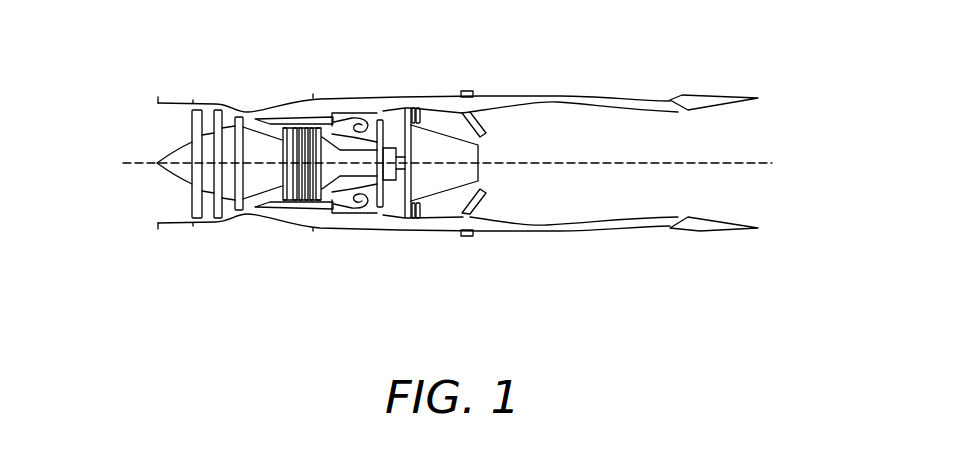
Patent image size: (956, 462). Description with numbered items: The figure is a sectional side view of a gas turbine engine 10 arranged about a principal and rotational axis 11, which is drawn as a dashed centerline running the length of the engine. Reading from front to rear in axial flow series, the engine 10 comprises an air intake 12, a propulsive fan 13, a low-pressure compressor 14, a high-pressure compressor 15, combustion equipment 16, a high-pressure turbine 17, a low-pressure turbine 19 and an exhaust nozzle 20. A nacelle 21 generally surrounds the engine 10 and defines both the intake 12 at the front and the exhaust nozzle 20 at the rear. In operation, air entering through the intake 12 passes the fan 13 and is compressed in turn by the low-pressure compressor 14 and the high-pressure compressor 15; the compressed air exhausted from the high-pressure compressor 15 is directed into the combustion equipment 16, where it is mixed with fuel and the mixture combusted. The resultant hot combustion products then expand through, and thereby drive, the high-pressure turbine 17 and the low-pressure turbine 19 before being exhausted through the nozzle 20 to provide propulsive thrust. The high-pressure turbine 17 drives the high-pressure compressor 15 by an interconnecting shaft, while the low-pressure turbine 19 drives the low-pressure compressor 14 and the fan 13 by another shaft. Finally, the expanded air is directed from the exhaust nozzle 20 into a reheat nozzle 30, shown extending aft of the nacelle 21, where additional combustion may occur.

The gas turbine engine 10 is at (150, 58).
The principal and rotational axis 11 is at (747, 164).
The air intake 12 is at (153, 193).
The propulsive fan 13 is at (193, 194).
The low-pressure compressor 14 is at (213, 110).
The high-pressure compressor 15 is at (287, 126).
The combustion equipment 16 is at (345, 216).
The high-pressure turbine 17 is at (381, 212).
The low-pressure turbine 19 is at (416, 220).
The exhaust nozzle 20 is at (481, 214).
The nacelle 21 is at (372, 106).
The reheat nozzle 30 is at (623, 62).